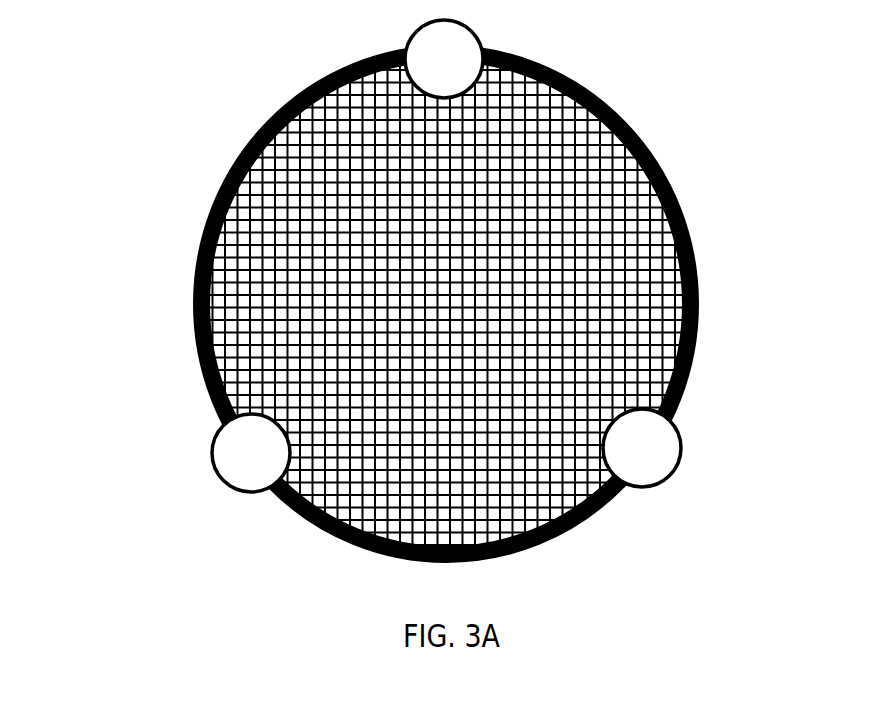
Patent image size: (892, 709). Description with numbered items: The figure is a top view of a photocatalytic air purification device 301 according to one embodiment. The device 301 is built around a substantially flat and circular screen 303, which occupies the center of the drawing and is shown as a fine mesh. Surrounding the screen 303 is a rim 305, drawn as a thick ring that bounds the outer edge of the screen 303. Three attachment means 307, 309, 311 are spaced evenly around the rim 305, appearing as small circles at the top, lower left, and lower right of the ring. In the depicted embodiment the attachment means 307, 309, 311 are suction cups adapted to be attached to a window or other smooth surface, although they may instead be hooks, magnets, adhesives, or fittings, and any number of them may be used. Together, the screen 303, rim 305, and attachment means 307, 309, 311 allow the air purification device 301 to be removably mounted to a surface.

The air purification device 301 is at (413, 280).
The screen 303 is at (600, 187).
The rim 305 is at (572, 77).
The attachment means 307 is at (458, 60).
The attachment means 309 is at (248, 470).
The attachment means 311 is at (653, 446).